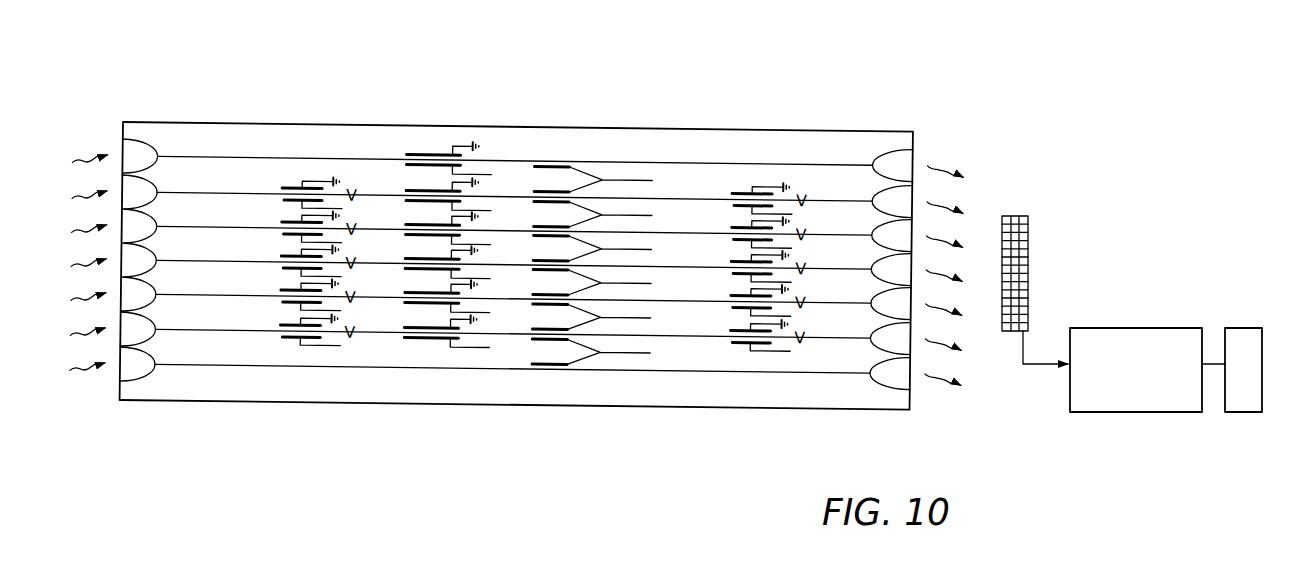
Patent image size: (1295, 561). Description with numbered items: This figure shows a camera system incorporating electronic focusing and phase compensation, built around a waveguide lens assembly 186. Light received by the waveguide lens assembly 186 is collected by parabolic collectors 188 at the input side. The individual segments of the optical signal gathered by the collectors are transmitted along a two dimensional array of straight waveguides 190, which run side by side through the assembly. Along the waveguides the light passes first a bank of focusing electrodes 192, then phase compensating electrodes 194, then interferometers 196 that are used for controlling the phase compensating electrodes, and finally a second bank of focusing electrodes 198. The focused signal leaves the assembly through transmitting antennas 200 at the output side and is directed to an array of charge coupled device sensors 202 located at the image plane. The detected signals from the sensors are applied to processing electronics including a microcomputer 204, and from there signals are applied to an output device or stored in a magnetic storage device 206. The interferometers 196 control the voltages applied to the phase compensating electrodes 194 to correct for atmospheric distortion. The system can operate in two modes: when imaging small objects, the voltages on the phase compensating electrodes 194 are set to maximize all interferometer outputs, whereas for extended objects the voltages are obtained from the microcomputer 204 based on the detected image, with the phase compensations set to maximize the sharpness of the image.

The waveguide lens assembly 186 is at (123, 85).
The parabolic collectors 188 is at (145, 140).
The straight waveguides 190 is at (240, 193).
The focusing electrodes 192 is at (329, 144).
The phase compensating electrodes 194 is at (439, 142).
The interferometers 196 is at (584, 142).
The second bank of focusing electrodes 198 is at (774, 149).
The transmitting antennas 200 is at (897, 153).
The charge coupled device sensors 202 is at (1018, 215).
The microcomputer 204 is at (1115, 327).
The magnetic storage device 206 is at (1243, 327).